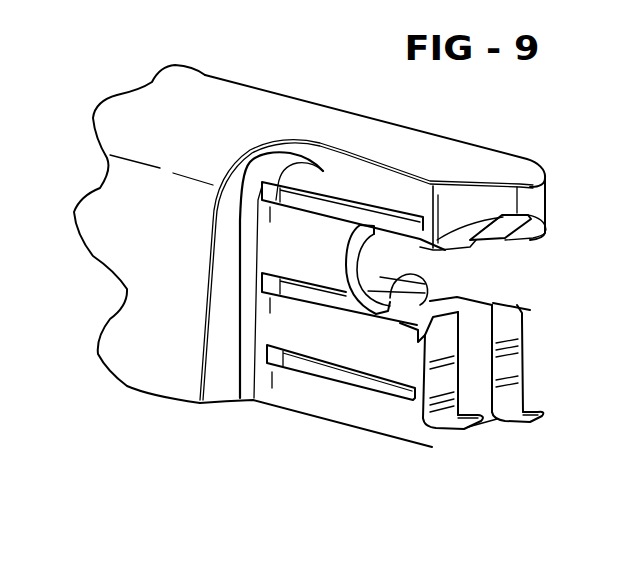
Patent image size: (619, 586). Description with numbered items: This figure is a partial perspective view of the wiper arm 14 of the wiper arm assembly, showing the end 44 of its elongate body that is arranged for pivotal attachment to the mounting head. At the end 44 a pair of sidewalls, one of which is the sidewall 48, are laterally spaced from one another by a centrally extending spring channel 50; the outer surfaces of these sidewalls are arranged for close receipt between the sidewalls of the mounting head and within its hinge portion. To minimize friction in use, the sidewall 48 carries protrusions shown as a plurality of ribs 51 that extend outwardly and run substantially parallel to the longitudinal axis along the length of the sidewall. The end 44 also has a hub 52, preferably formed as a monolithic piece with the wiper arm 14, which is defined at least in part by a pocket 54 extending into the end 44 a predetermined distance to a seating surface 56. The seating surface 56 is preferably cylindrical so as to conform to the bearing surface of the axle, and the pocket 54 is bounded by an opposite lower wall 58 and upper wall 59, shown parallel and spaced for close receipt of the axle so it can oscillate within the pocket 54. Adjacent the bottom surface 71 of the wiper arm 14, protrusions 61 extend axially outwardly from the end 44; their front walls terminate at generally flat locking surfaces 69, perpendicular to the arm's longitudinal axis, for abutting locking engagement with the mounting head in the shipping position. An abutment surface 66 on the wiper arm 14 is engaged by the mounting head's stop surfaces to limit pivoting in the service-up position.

The wiper arm 14 is at (240, 78).
The end 44 is at (538, 188).
The sidewall 48 is at (400, 420).
The spring channel 50 is at (480, 439).
The ribs 51 is at (297, 200).
The hub 52 is at (474, 267).
The pocket 54 is at (493, 300).
The seating surface 56 is at (383, 258).
The lower wall 58 is at (405, 274).
The upper wall 59 is at (440, 250).
The protrusions 61 is at (528, 424).
The abutment surface 66 is at (533, 227).
The locking surfaces 69 is at (541, 424).
The bottom surface 71 is at (163, 398).